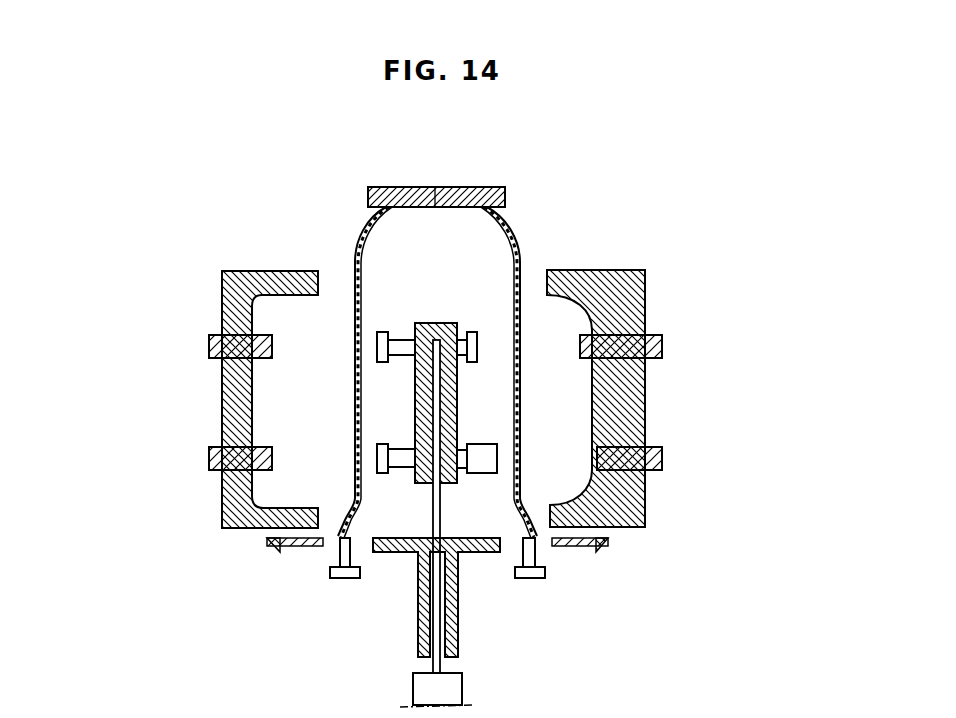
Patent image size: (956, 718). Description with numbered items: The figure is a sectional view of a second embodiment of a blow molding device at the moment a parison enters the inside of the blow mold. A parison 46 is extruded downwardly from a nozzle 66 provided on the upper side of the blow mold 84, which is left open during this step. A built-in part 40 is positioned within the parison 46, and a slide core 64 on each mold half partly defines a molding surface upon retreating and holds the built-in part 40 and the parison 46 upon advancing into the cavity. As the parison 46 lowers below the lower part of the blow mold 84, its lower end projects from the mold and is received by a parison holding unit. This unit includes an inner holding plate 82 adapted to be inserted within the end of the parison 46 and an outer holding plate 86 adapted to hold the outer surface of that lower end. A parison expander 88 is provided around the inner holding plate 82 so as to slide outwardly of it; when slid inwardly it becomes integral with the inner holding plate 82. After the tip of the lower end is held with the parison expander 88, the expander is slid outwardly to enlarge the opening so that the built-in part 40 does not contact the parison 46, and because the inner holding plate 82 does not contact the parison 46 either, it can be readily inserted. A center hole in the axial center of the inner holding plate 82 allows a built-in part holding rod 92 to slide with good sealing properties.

The built-in part 40 is at (428, 320).
The parison 46 is at (350, 267).
The slide core 64 is at (209, 347).
The nozzle 66 is at (460, 187).
The inner holding plate 82 is at (398, 553).
The blow mold 84 is at (222, 283).
The outer holding plate 86 is at (277, 548).
The parison expander 88 is at (330, 567).
The built-in part holding rod 92 is at (442, 665).